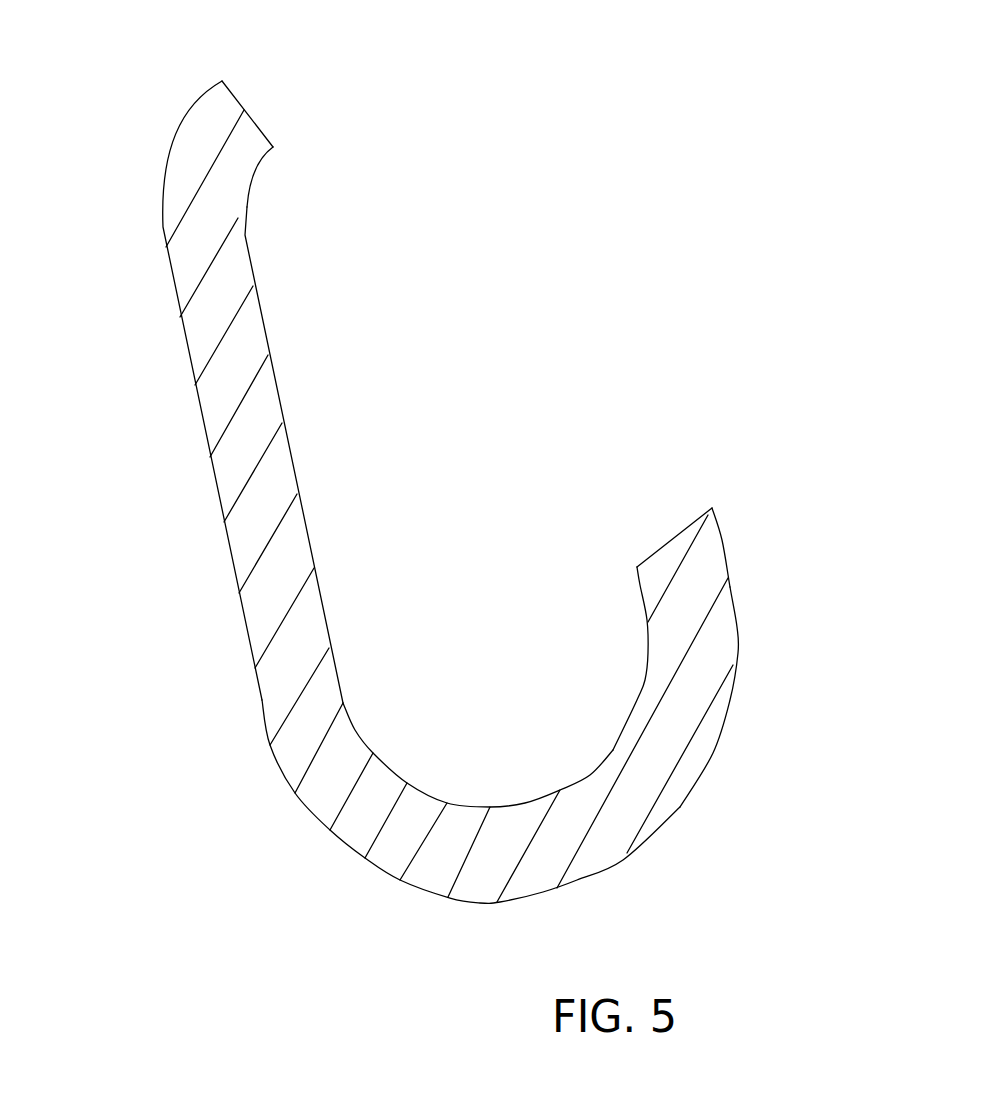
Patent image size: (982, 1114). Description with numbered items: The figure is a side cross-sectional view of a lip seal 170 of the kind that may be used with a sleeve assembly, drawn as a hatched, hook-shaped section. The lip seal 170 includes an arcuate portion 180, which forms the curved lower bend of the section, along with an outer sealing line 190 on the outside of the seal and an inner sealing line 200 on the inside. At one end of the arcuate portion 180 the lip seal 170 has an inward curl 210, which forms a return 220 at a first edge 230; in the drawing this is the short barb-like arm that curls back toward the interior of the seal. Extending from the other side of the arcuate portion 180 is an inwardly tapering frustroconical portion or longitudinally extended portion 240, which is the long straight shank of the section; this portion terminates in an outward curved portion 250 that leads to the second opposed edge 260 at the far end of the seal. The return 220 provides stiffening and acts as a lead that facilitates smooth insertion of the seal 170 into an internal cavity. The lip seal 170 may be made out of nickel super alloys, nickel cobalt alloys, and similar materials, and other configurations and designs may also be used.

The lip seal 170 is at (405, 392).
The arcuate portion 180 is at (402, 880).
The outer sealing line 190 is at (735, 690).
The inner sealing line 200 is at (163, 228).
The inward curl 210 is at (717, 525).
The return 220 is at (635, 567).
The first edge 230 is at (658, 545).
The longitudinally extended portion 240 is at (262, 323).
The outward curved portion 250 is at (250, 183).
The second opposed edge 260 is at (237, 90).